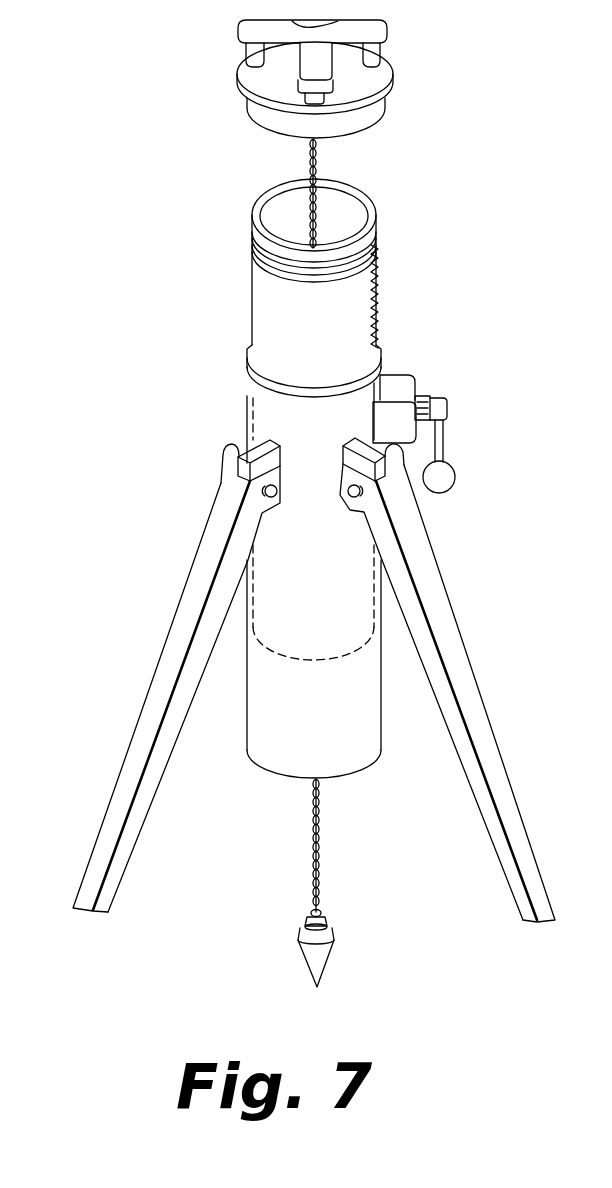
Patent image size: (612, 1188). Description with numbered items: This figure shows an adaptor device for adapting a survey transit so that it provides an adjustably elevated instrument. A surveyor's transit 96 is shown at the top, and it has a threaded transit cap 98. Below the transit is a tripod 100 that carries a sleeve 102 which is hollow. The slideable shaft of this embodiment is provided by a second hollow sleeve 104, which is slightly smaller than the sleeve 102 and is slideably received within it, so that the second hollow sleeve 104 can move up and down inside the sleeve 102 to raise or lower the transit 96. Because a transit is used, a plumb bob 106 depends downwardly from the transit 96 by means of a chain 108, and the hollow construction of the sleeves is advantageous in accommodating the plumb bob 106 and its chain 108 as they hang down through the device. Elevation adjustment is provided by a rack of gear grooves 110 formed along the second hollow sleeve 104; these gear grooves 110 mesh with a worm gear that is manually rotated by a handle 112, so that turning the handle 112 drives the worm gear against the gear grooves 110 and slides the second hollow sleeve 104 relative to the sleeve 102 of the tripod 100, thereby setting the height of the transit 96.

The surveyor's transit 96 is at (395, 68).
The threaded transit cap 98 is at (383, 105).
The tripod 100 is at (190, 568).
The sleeve 102 is at (248, 380).
The second hollow sleeve 104 is at (378, 249).
The plumb bob 106 is at (330, 948).
The chain 108 is at (311, 170).
The gear grooves 110 is at (378, 320).
The handle 112 is at (448, 437).